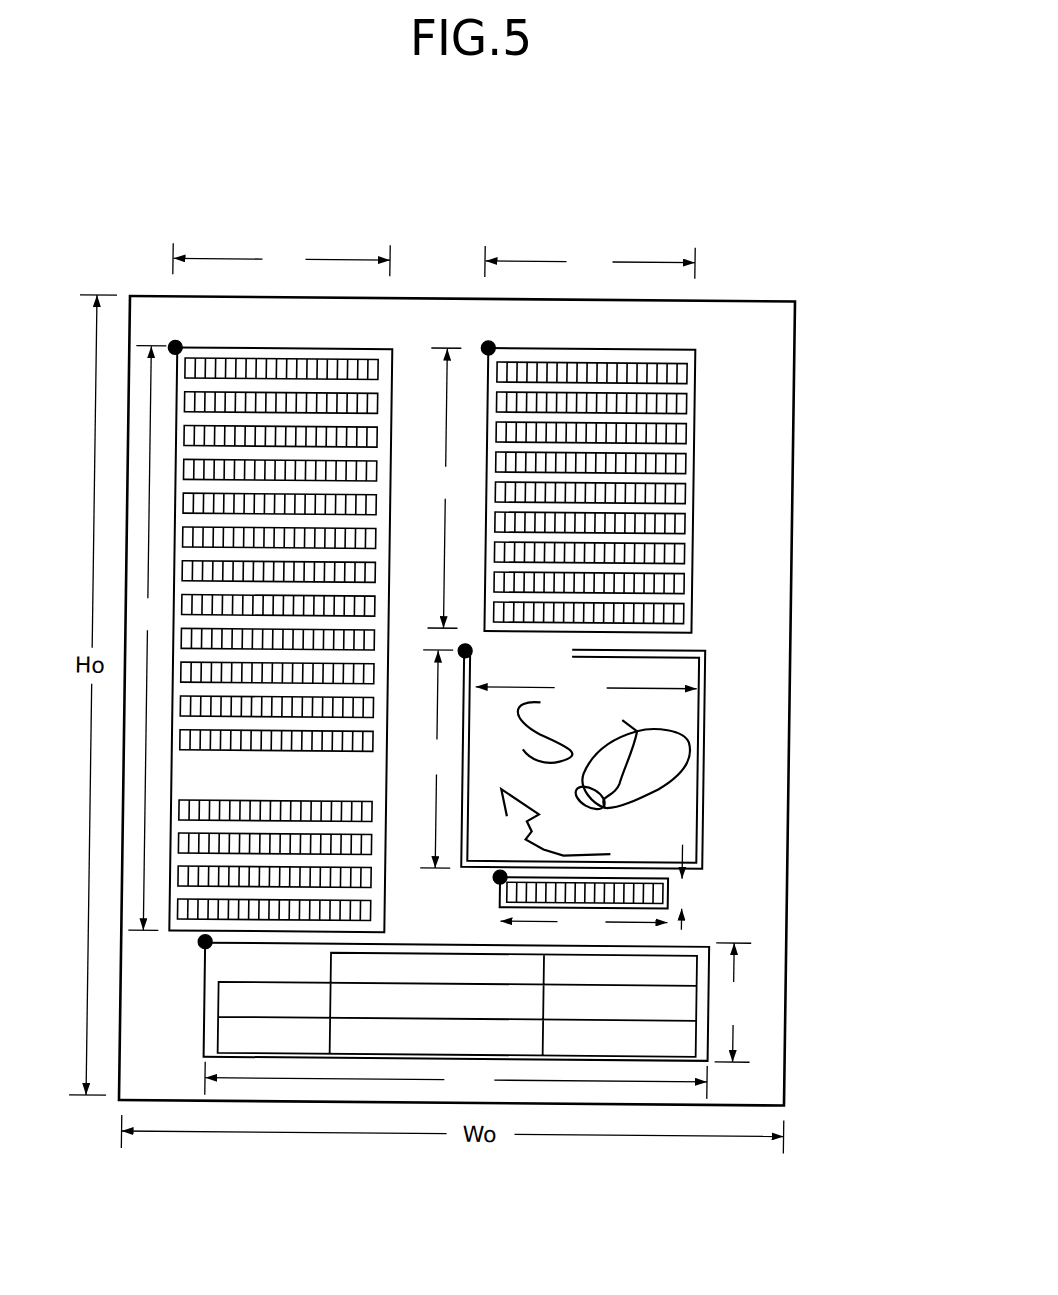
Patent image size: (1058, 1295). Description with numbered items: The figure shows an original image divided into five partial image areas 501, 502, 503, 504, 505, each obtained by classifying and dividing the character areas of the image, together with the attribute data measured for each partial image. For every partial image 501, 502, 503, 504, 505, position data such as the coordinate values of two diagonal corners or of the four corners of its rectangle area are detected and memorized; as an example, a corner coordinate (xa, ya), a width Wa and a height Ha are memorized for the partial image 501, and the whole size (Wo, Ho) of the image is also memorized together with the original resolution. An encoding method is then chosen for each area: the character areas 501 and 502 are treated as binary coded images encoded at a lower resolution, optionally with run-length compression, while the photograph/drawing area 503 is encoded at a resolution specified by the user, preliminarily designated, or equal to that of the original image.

The partial image area 501 is at (339, 337).
The partial image area 502 is at (703, 438).
The photograph/drawing area 503 is at (713, 770).
The partial image area 504 is at (682, 880).
The partial image area 505 is at (722, 980).